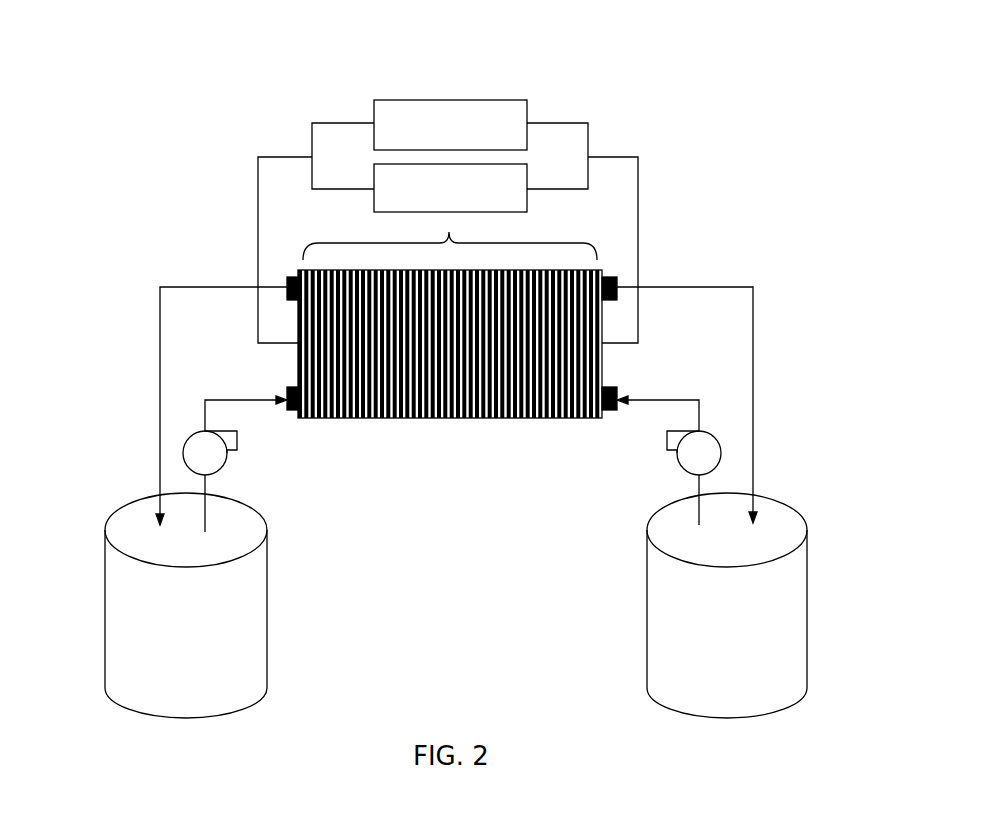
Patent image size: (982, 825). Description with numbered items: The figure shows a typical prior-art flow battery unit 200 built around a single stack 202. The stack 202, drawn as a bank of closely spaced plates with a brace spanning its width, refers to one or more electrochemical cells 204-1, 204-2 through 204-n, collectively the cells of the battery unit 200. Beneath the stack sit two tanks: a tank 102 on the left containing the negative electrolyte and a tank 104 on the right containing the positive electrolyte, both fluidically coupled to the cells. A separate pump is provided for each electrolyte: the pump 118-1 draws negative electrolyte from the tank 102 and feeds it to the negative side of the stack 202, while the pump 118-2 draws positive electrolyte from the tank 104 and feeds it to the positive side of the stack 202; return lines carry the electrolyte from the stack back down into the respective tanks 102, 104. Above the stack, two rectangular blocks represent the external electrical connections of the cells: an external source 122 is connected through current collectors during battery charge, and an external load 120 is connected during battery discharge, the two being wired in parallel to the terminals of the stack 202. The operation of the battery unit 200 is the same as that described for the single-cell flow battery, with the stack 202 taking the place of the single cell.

The battery unit 200 is at (117, 30).
The external source 122 is at (540, 96).
The external load 120 is at (539, 157).
The stack 202 is at (479, 345).
The electrochemical cell 204-1 is at (346, 429).
The electrochemical cell 204-2 is at (445, 430).
The electrochemical cell 204-n is at (597, 430).
The pump 118-1 is at (172, 449).
The pump 118-2 is at (733, 449).
The tank 102 is at (124, 627).
The tank 104 is at (796, 598).